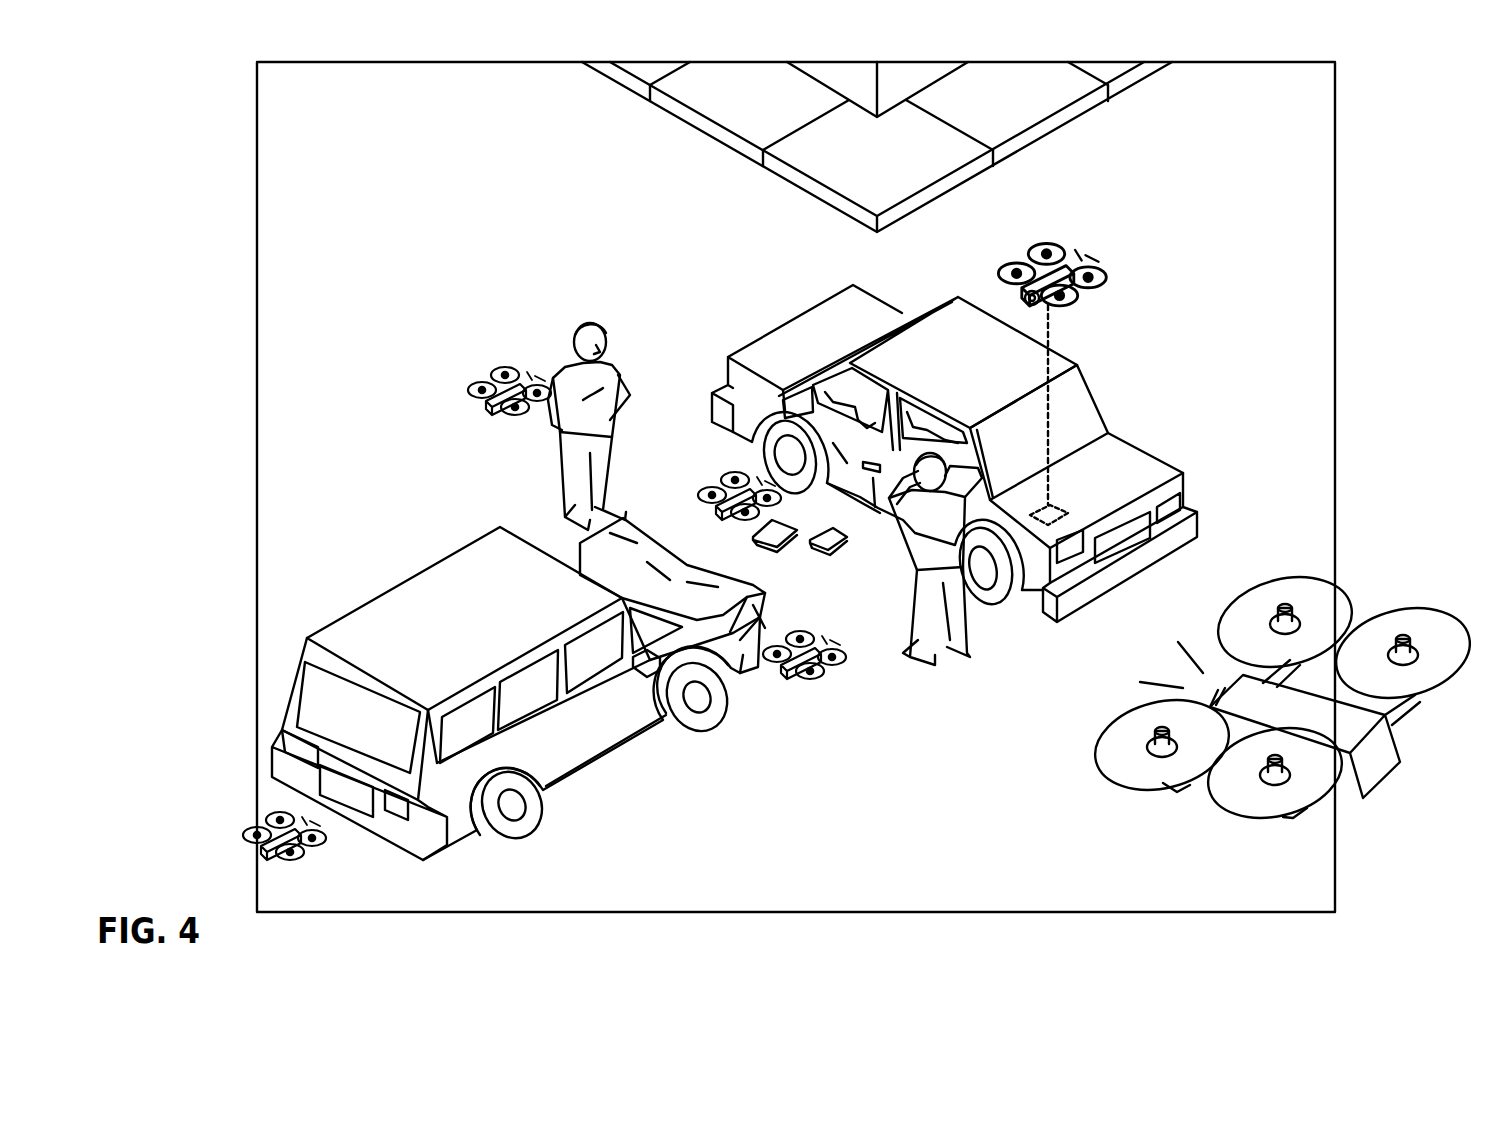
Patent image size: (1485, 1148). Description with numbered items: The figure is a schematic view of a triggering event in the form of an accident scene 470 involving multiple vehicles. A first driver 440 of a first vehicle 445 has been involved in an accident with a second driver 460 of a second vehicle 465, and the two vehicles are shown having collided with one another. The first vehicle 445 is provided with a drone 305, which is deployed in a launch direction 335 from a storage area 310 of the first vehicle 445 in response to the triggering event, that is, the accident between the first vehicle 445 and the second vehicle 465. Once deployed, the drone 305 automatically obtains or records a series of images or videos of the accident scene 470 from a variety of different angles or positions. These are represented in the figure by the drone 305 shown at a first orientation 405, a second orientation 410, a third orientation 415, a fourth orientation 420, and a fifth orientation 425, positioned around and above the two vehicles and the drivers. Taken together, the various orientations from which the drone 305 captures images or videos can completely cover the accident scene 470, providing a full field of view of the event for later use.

The drone 305 is at (827, 561).
The storage area 310 is at (1066, 511).
The launch direction 335 is at (1055, 327).
The first orientation 405 is at (237, 827).
The second orientation 410 is at (480, 376).
The third orientation 415 is at (840, 630).
The fourth orientation 420 is at (712, 480).
The fifth orientation 425 is at (1355, 590).
The first driver 440 is at (968, 640).
The first vehicle 445 is at (1130, 452).
The second driver 460 is at (617, 365).
The second vehicle 465 is at (410, 598).
The accident scene 470 is at (448, 196).